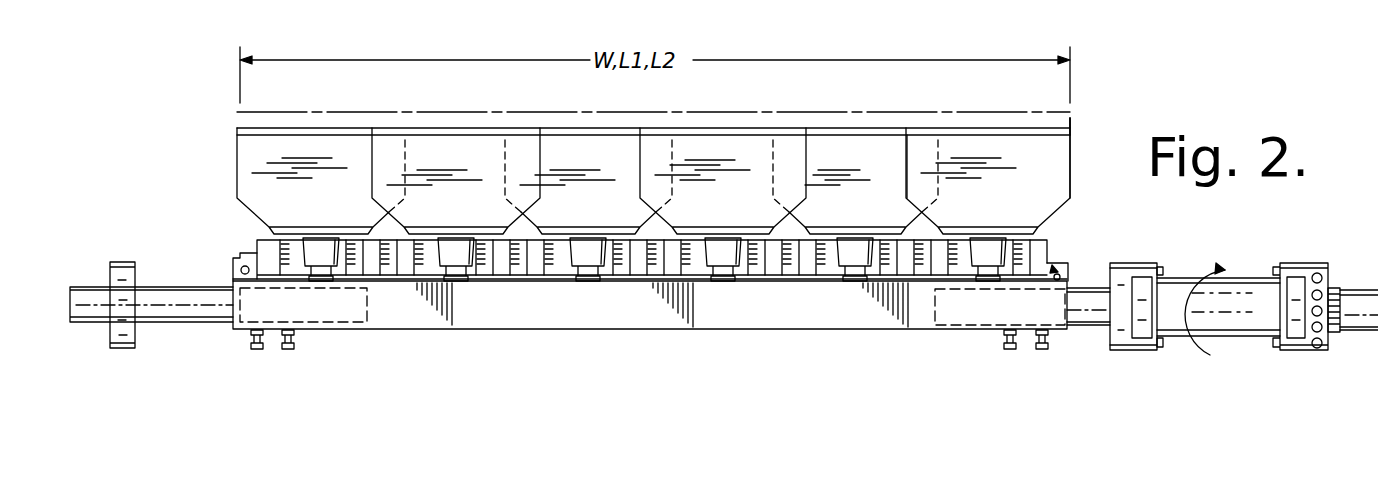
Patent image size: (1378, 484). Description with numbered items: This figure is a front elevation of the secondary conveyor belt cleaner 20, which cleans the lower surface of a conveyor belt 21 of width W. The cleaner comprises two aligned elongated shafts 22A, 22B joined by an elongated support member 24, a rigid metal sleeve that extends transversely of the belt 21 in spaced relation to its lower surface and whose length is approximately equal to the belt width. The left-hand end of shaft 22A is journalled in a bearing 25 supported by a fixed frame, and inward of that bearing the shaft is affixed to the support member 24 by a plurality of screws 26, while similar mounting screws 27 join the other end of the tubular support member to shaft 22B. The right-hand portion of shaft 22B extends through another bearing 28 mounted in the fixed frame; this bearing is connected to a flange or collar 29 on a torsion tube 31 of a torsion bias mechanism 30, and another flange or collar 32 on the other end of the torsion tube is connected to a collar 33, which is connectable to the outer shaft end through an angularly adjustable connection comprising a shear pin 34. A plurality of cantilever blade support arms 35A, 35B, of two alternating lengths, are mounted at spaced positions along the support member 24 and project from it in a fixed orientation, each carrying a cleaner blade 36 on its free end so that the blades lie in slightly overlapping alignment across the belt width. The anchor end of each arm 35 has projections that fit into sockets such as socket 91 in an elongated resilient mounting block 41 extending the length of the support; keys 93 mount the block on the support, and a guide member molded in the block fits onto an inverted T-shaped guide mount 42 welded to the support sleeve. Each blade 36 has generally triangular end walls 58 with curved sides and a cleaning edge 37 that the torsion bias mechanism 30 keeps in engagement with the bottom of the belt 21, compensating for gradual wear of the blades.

The secondary conveyor belt cleaner 20 is at (1088, 152).
The conveyor belt 21 is at (883, 112).
The cleaning edge 37 is at (550, 128).
The end wall 58 is at (906, 154).
The cleaner blade 36 is at (471, 166).
The cantilever blade support arm 35 is at (737, 208).
The cantilever blade support arm 35A is at (983, 237).
The cantilever blade support arm 35B is at (851, 247).
The resilient mounting block 41 is at (537, 272).
The guide mount 42 is at (643, 280).
The socket 91 is at (820, 278).
The support member 24 is at (697, 330).
The key 93 is at (243, 266).
The screws 26 is at (288, 350).
The mounting screws 27 is at (1042, 352).
The shaft 22A is at (167, 320).
The shaft 22B is at (1095, 325).
The bearing 25 is at (132, 262).
The bearing 28 is at (1120, 350).
The flange or collar 29 is at (1142, 263).
The torsion bias mechanism 30 is at (1228, 343).
The torsion tube 31 is at (1243, 278).
The flange or collar 32 is at (1300, 263).
The collar 33 is at (1320, 350).
The shear pin 34 is at (1345, 287).